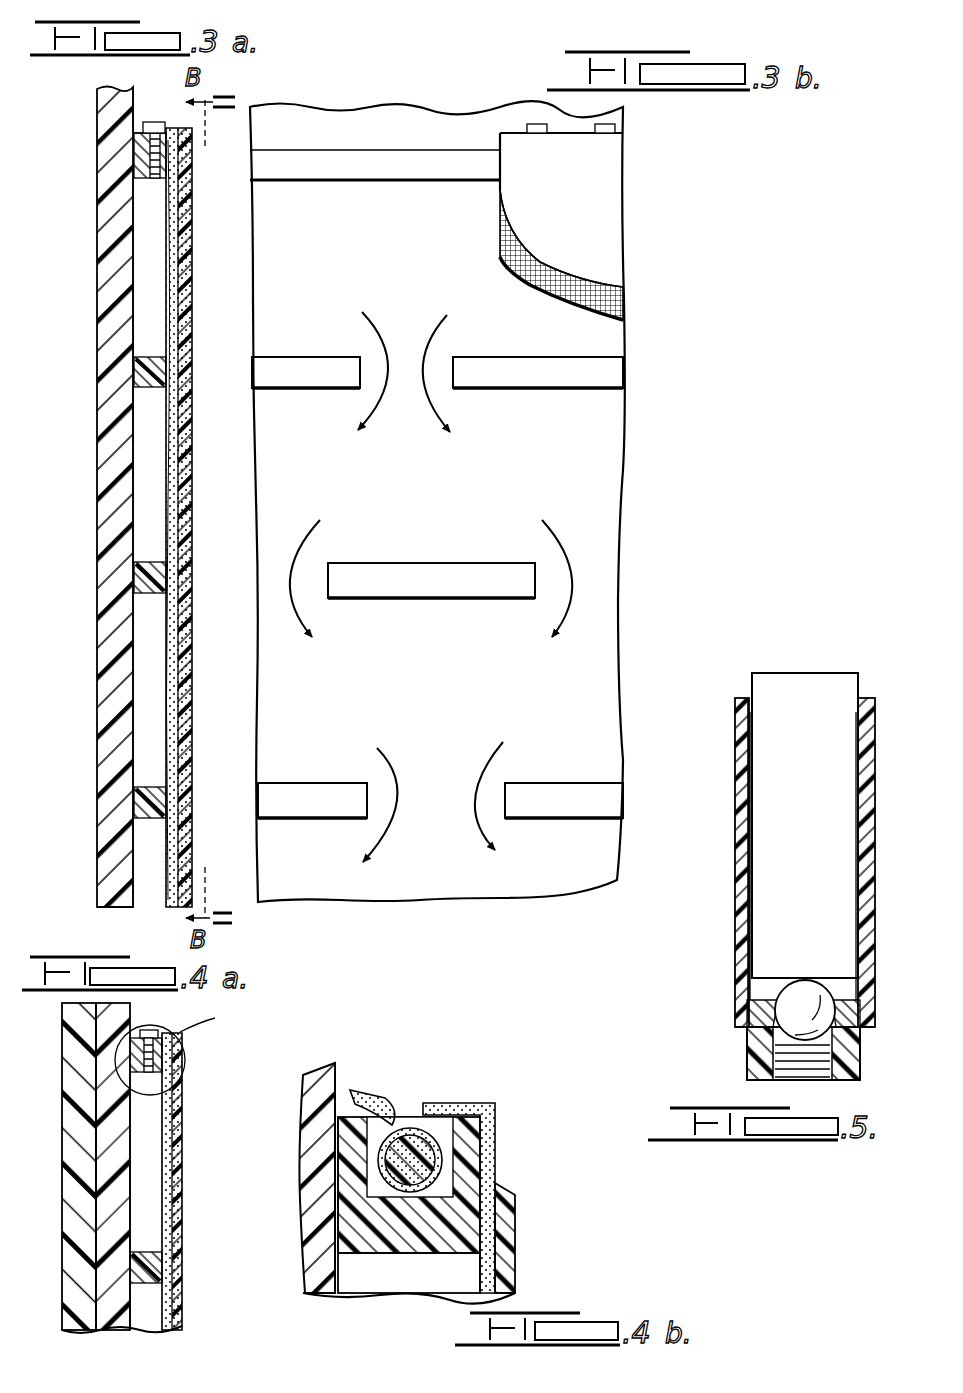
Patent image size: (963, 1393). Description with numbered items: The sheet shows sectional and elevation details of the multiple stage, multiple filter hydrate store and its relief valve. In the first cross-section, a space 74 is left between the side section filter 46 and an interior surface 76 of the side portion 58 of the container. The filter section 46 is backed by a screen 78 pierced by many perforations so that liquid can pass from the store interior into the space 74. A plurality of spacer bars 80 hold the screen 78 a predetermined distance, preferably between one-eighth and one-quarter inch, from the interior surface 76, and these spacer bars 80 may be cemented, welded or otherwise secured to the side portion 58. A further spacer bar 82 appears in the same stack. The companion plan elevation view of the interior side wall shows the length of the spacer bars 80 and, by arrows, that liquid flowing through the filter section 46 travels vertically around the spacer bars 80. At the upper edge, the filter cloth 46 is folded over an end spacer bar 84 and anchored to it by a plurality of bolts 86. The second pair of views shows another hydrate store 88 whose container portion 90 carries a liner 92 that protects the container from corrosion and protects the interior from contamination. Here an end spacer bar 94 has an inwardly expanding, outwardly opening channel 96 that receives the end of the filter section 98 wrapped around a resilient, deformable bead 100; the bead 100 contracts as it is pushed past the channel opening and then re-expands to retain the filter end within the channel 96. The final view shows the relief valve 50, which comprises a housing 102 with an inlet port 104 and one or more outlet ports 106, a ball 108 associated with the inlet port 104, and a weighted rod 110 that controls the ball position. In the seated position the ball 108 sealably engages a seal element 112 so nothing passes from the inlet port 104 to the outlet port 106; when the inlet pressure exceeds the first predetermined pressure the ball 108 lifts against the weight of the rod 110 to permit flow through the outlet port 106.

In FIG. 3A, the side section filter 46 is at (190, 438).
In FIG. 3B, the side section filter 46 is at (595, 192).
In FIG. 5, the relief valve 50 is at (792, 886).
In FIG. 3A, the side portion 58 is at (97, 497).
In FIG. 3B, the side portion 58 is at (608, 425).
In FIG. 3A, the space 74 is at (150, 262).
In FIG. 3A, the interior surface 76 is at (146, 228).
In FIG. 3A, the screen 78 is at (175, 476).
In FIG. 3B, the screen 78 is at (502, 260).
In FIG. 3A, the spacer bars 80 is at (150, 598).
In FIG. 3B, the spacer bars 80 is at (503, 381).
In FIG. 3A, the spacer 82 is at (140, 576).
In FIG. 3A, the end spacer bar 84 is at (134, 188).
In FIG. 3B, the end spacer bar 84 is at (362, 182).
In FIG. 3A, the bolts 86 is at (153, 122).
In FIG. 3B, the bolts 86 is at (537, 124).
In FIG. 4A, the hydrate store 88 is at (152, 1163).
In FIG. 4A, the container portion 90 is at (74, 1075).
In FIG. 4A, the liner 92 is at (64, 1152).
In FIG. 4B, the end spacer bar 94 is at (408, 1255).
In FIG. 4B, the channel 96 is at (368, 1196).
In FIG. 4B, the filter section 98 is at (455, 1103).
In FIG. 4B, the bead 100 is at (405, 1130).
In FIG. 5, the housing 102 is at (735, 805).
In FIG. 5, the inlet port 104 is at (835, 1082).
In FIG. 5, the outlet ports 106 is at (870, 950).
In FIG. 5, the ball 108 is at (822, 1012).
In FIG. 5, the weighted rod 110 is at (838, 795).
In FIG. 5, the seal element 112 is at (775, 1032).